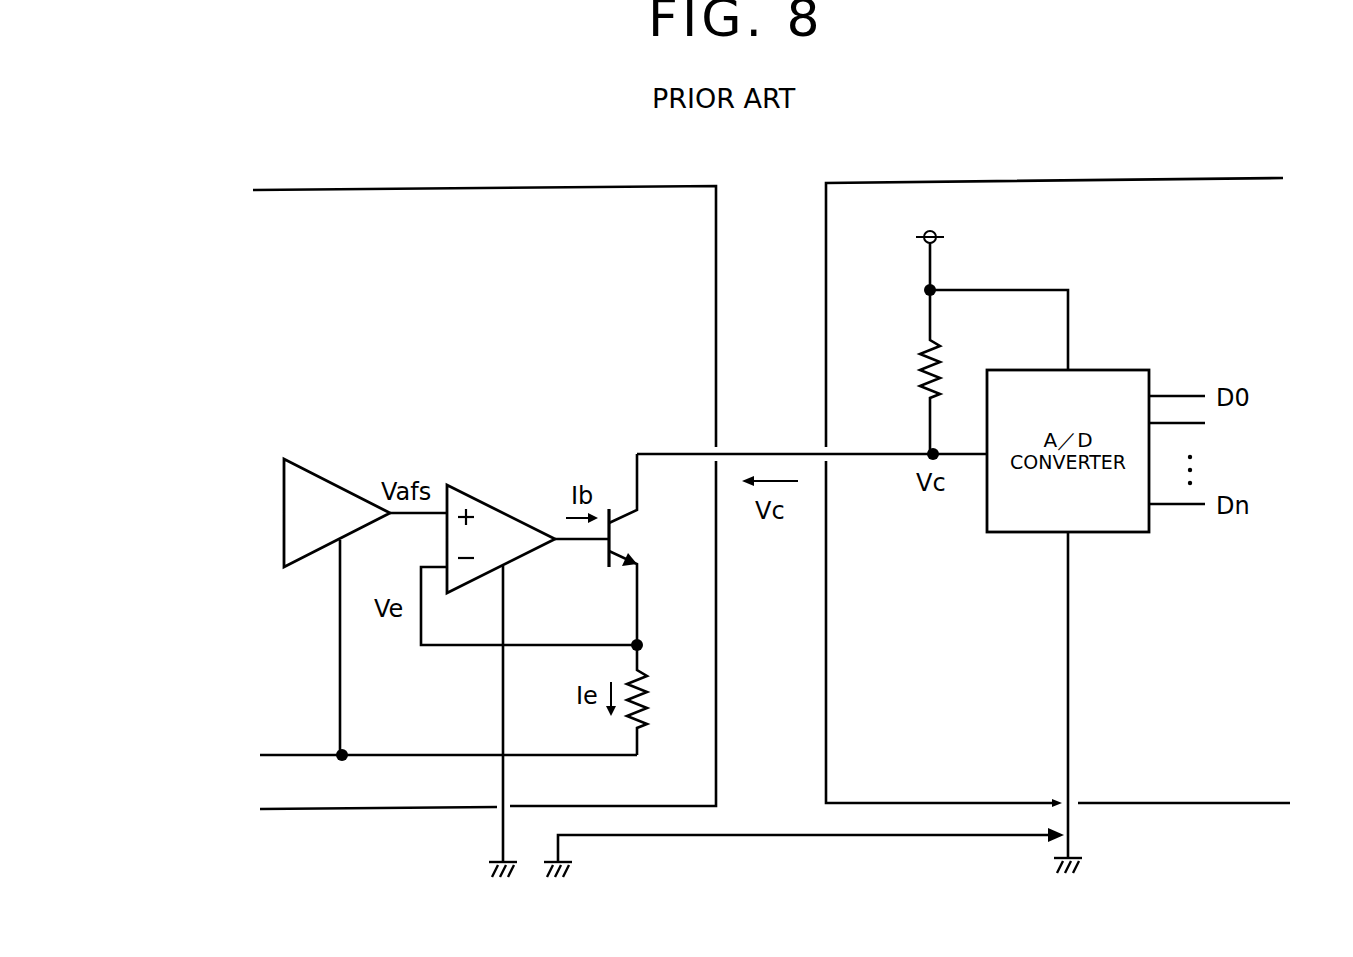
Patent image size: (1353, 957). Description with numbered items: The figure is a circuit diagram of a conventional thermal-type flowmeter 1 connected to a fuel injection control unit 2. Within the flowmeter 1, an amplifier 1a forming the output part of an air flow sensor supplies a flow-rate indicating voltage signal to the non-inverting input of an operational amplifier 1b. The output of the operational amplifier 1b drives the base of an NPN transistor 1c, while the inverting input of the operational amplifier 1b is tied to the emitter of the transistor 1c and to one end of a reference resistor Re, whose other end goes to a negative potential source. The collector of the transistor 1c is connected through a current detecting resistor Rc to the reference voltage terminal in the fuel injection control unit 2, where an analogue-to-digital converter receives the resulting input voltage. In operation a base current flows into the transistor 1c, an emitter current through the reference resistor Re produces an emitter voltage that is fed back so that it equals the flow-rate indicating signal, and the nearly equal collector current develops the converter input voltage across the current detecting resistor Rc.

The thermal-type flowmeter 1 is at (473, 187).
The fuel injection control unit 2 is at (1014, 180).
The amplifier 1a is at (341, 487).
The operational amplifier 1b is at (503, 509).
The transistor 1c is at (636, 542).
The reference resistor Re is at (656, 698).
The current detecting resistor Rc is at (916, 372).